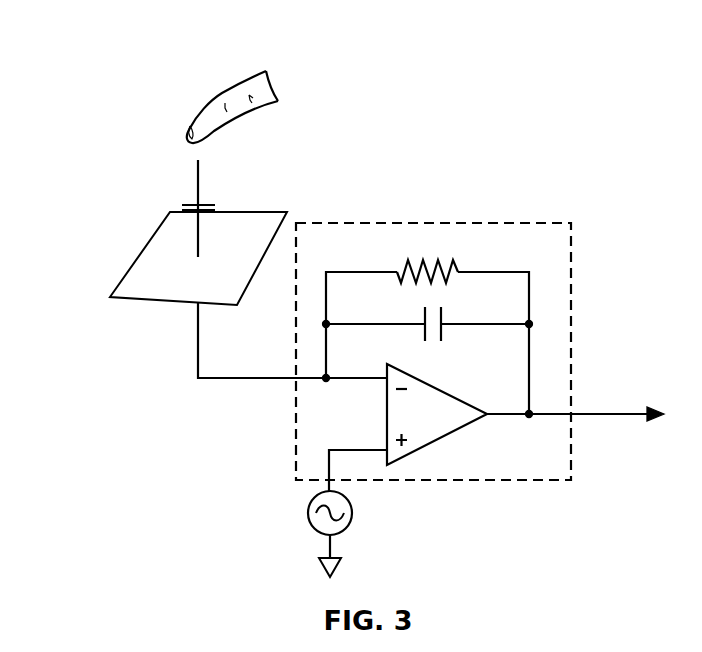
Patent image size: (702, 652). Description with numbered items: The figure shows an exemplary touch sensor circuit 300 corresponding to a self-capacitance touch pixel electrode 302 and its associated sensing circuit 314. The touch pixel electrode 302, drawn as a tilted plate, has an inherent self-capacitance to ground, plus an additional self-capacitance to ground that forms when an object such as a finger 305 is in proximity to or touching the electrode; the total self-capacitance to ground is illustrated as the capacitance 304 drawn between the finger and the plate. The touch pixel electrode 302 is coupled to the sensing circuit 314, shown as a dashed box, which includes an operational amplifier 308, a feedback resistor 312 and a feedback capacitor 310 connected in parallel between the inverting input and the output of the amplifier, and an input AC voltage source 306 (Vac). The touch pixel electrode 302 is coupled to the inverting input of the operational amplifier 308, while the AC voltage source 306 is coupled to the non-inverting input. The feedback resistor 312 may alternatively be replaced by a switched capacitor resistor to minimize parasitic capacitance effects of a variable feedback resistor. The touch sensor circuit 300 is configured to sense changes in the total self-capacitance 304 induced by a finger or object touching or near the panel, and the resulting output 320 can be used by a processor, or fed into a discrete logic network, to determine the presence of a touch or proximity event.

The touch sensor circuit 300 is at (138, 49).
The touch pixel electrode 302 is at (135, 285).
The capacitance 304 is at (207, 202).
The finger 305 is at (222, 88).
The AC voltage source 306 is at (352, 512).
The operational amplifier 308 is at (435, 440).
The feedback capacitor 310 is at (443, 317).
The feedback resistor 312 is at (437, 260).
The sensing circuit 314 is at (536, 223).
The output 320 is at (610, 412).